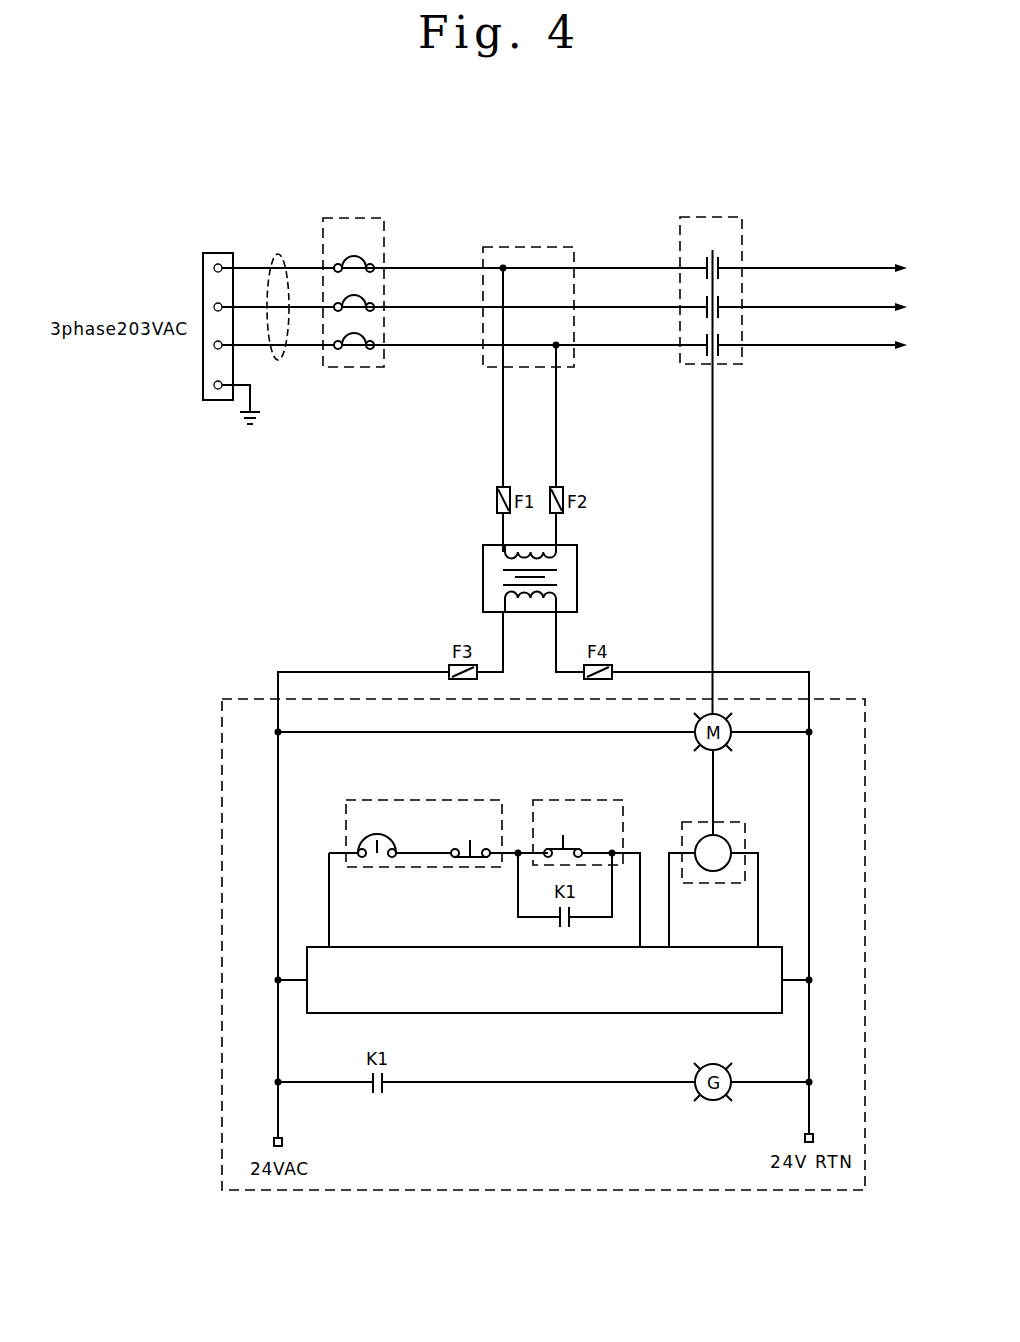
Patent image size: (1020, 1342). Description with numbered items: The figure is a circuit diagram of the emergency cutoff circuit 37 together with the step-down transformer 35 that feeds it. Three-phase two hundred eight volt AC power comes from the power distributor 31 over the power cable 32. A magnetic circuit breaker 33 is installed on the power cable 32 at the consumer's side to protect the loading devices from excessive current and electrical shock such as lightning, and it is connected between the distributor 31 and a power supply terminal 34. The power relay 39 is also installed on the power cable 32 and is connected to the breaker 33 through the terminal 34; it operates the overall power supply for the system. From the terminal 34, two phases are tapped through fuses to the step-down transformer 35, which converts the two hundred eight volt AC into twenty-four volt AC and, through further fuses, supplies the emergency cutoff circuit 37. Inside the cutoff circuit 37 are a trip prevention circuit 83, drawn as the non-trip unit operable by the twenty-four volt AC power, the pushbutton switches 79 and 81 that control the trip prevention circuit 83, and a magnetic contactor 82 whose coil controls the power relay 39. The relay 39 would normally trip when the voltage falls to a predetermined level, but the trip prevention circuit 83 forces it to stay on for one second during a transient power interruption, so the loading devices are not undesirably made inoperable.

The power distributor 31 is at (215, 253).
The power cable 32 is at (278, 253).
The magnetic circuit breaker 33 is at (363, 218).
The power supply terminal 34 is at (535, 247).
The step-down transformer 35 is at (483, 578).
The emergency cutoff circuit 37 is at (865, 768).
The power relay 39 is at (719, 217).
The switch 79 is at (465, 800).
The switch 81 is at (583, 800).
The magnetic contactor 82 is at (733, 822).
The trip prevention circuit 83 is at (405, 947).